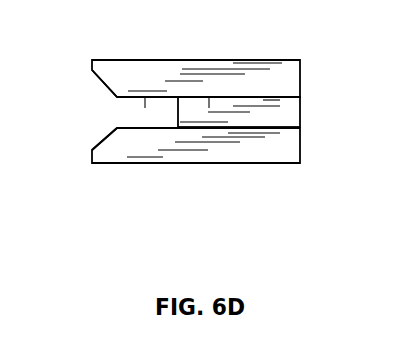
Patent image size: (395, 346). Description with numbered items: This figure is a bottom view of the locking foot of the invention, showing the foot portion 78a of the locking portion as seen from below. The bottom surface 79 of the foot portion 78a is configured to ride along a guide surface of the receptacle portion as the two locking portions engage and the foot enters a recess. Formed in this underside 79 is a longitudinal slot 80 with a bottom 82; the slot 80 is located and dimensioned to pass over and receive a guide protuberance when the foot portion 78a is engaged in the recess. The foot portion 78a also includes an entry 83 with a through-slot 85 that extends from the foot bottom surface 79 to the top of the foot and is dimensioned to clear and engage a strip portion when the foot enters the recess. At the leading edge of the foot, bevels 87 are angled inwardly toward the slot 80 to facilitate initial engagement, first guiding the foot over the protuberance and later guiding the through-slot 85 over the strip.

The foot portion 78a is at (232, 163).
The bottom surface 79 is at (290, 77).
The longitudinal slot 80 is at (290, 118).
The bottom 82 is at (209, 108).
The entry 83 is at (120, 112).
The through-slot 85 is at (145, 108).
The bevels 87 is at (98, 85).